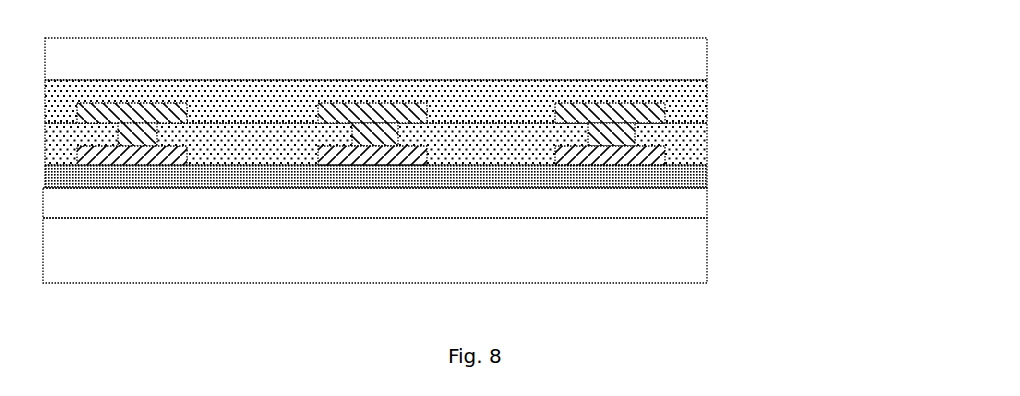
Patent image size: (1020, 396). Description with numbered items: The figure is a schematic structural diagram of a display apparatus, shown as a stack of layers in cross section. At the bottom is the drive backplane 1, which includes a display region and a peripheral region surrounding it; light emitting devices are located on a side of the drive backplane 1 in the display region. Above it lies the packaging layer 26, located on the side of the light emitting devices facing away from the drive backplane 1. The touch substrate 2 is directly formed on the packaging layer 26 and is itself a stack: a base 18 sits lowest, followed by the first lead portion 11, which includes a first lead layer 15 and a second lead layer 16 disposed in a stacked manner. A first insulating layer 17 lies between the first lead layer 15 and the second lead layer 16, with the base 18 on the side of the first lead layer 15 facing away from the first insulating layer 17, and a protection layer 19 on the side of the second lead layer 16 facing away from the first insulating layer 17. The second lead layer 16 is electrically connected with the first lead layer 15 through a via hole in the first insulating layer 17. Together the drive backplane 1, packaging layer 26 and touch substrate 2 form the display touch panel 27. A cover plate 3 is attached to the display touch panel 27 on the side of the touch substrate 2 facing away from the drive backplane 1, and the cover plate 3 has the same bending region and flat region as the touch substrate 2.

The drive backplane 1 is at (709, 250).
The touch substrate 2 is at (462, 136).
The cover plate 3 is at (709, 59).
The first lead portion 11 is at (465, 137).
The first lead layer 15 is at (371, 155).
The second lead layer 16 is at (371, 124).
The first insulating layer 17 is at (709, 137).
The base 18 is at (423, 179).
The protection layer 19 is at (709, 95).
The packaging layer 26 is at (709, 202).
The display touch panel 27 is at (506, 181).